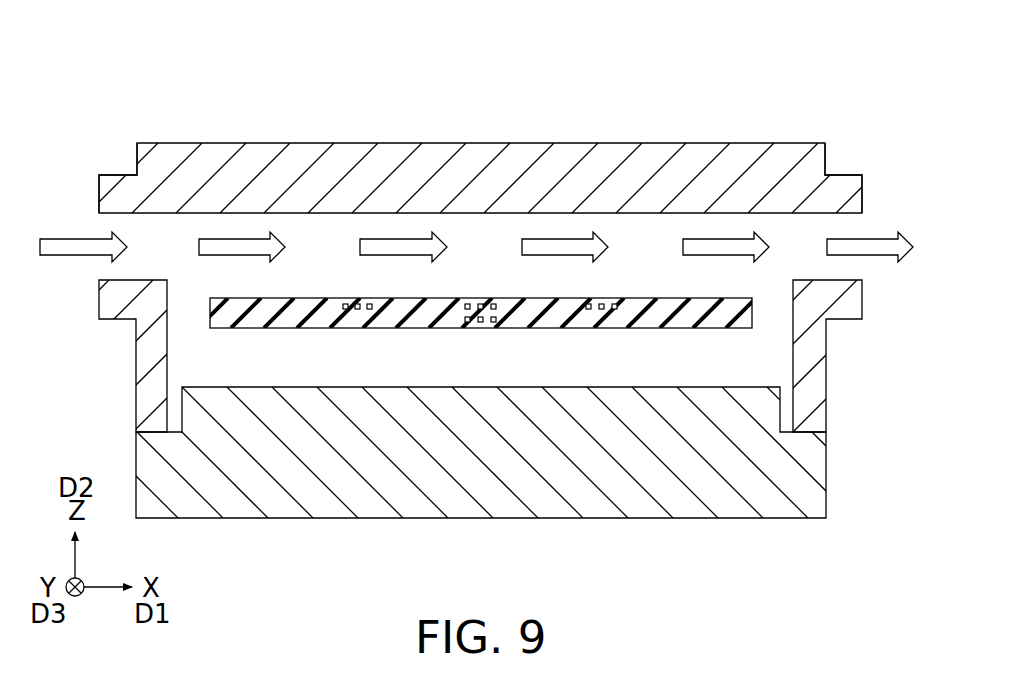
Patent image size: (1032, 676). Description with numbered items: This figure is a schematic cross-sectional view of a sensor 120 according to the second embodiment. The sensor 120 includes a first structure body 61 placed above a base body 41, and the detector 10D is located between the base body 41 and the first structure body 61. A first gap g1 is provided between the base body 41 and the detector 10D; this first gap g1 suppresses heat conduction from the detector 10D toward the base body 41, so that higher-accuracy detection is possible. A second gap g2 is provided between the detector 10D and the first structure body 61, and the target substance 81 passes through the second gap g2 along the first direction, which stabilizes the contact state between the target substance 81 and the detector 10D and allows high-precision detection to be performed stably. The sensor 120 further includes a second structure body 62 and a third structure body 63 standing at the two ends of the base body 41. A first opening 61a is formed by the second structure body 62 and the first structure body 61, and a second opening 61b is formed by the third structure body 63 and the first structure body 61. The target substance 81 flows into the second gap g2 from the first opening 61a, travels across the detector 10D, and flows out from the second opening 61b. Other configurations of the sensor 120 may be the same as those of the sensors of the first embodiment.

The sensor 120 is at (838, 76).
The first structure body 61 is at (448, 170).
The first opening 61a is at (134, 233).
The second opening 61b is at (825, 232).
The target substance 81 is at (231, 239).
The second structure body 62 is at (152, 338).
The third structure body 63 is at (822, 371).
The base body 41 is at (295, 435).
The detector 10D is at (202, 338).
The second gap g2 is at (483, 276).
The first gap g1 is at (468, 359).